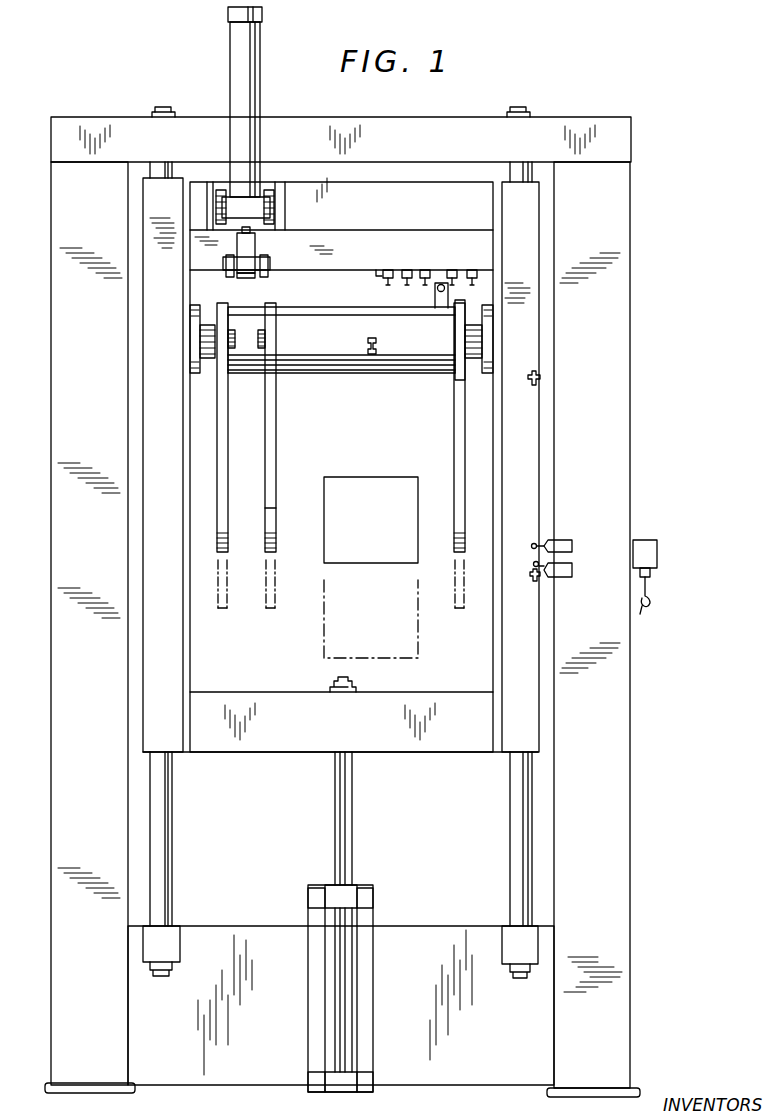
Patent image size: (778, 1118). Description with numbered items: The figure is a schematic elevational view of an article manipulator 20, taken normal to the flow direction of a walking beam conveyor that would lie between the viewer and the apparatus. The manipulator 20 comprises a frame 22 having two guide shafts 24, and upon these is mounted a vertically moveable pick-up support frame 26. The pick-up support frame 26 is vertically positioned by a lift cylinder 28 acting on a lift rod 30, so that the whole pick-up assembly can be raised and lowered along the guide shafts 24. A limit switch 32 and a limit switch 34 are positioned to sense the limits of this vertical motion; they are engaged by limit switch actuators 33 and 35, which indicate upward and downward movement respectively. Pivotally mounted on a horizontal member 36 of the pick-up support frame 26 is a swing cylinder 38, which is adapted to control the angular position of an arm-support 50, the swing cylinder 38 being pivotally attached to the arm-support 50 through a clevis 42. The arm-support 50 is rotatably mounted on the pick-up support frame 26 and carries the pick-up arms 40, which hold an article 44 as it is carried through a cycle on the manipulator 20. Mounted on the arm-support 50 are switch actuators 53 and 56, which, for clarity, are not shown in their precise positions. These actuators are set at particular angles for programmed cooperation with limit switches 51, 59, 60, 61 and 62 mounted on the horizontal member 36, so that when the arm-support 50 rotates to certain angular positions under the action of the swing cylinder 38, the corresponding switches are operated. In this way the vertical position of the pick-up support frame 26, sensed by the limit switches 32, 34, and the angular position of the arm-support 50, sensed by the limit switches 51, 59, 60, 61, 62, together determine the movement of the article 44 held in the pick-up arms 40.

The manipulator 20 is at (650, 423).
The frame 22 is at (631, 210).
The guide shafts 24 is at (173, 892).
The pick-up support frame 26 is at (192, 655).
The lift cylinder 28 is at (374, 962).
The lift rod 30 is at (353, 845).
The limit switch 32 is at (568, 578).
The limit switch actuator 33 is at (532, 583).
The limit switch 34 is at (558, 540).
The limit switch actuator 35 is at (530, 372).
The horizontal member 36 is at (318, 279).
The swing cylinder 38 is at (261, 70).
The pick-up arms 40 is at (277, 530).
The clevis 42 is at (260, 246).
The article 44 is at (336, 484).
The arm-support 50 is at (410, 374).
The limit switch 51 is at (472, 268).
The switch actuator 53 is at (434, 299).
The switch actuator 56 is at (380, 346).
The limit switch 59 is at (452, 268).
The limit switch 60 is at (425, 268).
The limit switch 61 is at (407, 268).
The limit switch 62 is at (388, 268).